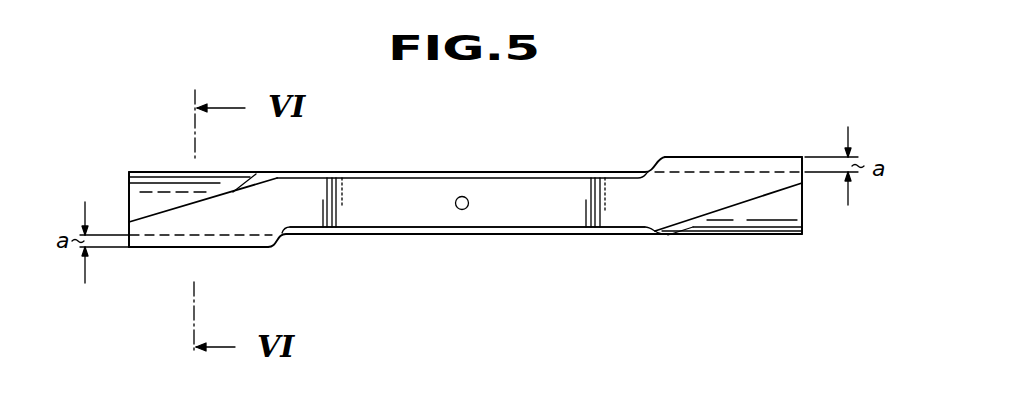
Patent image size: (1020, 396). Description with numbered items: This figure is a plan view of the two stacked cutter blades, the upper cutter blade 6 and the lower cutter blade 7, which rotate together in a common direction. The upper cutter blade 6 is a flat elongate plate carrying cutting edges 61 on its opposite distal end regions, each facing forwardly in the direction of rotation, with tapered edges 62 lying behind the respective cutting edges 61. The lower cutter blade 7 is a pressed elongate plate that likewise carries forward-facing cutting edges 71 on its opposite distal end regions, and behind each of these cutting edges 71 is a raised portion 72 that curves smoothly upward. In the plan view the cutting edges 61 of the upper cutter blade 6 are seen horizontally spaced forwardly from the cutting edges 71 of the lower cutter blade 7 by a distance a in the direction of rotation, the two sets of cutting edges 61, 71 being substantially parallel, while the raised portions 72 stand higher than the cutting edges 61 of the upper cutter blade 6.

The upper cutter blade 6 is at (388, 195).
The lower cutter blade 7 is at (557, 237).
The cutting edges 61 is at (158, 248).
The tapered edges 62 is at (222, 192).
The cutting edges 71 is at (227, 235).
The raised portions 72 is at (140, 192).